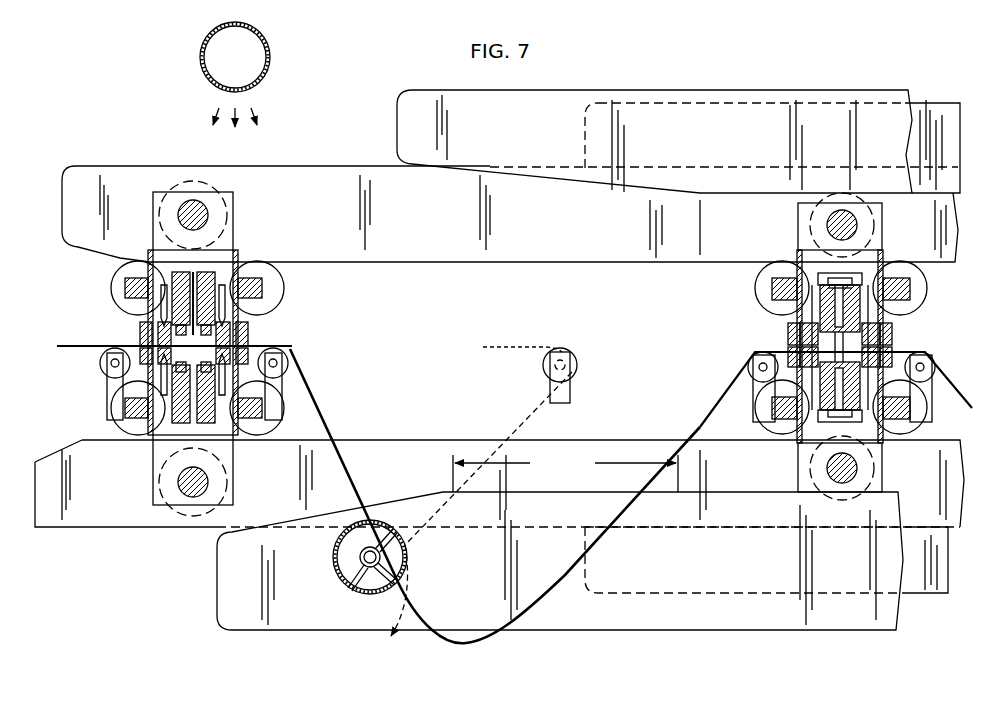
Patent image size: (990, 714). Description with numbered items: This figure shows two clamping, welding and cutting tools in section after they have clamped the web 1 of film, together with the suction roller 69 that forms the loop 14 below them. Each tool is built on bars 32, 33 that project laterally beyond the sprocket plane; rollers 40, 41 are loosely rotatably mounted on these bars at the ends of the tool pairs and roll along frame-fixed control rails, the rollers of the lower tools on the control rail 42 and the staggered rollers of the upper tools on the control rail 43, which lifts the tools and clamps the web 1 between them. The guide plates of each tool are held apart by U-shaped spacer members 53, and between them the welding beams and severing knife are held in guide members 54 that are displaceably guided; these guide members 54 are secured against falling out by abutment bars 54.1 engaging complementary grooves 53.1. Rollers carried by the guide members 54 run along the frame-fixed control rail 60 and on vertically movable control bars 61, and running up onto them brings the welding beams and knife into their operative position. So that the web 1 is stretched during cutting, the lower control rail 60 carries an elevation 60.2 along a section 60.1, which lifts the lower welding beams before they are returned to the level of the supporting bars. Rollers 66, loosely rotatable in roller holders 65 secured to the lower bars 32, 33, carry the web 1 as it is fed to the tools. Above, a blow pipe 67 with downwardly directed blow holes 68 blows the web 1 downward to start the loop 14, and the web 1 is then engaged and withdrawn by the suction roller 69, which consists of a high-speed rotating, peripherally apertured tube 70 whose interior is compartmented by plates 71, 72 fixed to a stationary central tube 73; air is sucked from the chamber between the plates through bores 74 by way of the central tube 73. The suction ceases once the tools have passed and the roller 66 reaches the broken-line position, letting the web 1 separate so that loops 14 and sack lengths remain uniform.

The web 1 is at (326, 430).
The loops 14 is at (520, 600).
The bar 32 is at (125, 289).
The bar 33 is at (262, 290).
The roller 40 is at (120, 275).
The roller 41 is at (266, 303).
The control rail 42 is at (131, 528).
The control rail 43 is at (127, 172).
The spacer member 53 is at (222, 265).
The groove 53.1 is at (828, 265).
The guide member 54 is at (232, 223).
The abutment bar 54.1 is at (858, 287).
The control rail 60 is at (397, 120).
The section 60.1 is at (565, 471).
The elevation 60.2 is at (670, 498).
The movable control bar 61 is at (588, 130).
The roller holder 65 is at (118, 386).
The roller 66 is at (100, 363).
The blow pipe 67 is at (269, 61).
The blow holes 68 is at (256, 86).
The suction roller 69 is at (331, 573).
The tube 70 is at (334, 554).
The plate 71 is at (389, 527).
The plate 72 is at (388, 582).
The central tube 73 is at (366, 568).
The bores 74 is at (383, 557).